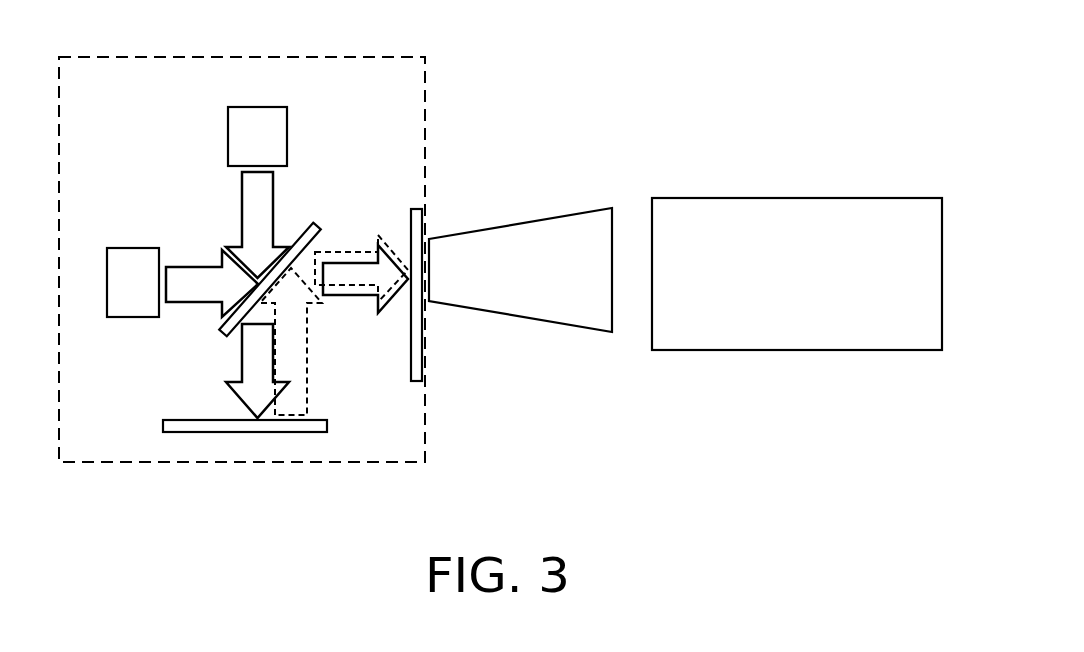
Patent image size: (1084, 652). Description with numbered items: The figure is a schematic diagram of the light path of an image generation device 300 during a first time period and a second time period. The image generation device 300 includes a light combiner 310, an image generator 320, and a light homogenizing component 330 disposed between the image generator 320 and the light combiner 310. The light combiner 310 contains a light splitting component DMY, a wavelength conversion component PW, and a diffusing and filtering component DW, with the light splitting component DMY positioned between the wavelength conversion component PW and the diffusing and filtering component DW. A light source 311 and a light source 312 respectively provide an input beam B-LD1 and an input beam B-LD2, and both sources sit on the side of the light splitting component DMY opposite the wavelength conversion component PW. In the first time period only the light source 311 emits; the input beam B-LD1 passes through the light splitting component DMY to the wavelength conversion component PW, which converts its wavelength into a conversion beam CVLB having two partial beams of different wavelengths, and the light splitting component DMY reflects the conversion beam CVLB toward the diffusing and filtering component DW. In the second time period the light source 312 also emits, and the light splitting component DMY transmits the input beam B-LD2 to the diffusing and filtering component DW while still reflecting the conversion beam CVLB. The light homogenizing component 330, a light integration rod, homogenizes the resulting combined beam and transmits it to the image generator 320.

The image generation device 300 is at (897, 497).
The light combiner 310 is at (354, 56).
The light source 311 is at (287, 135).
The light source 312 is at (120, 317).
The image generator 320 is at (795, 198).
The light homogenizing component 330 is at (542, 218).
The input beam B-LD1 is at (240, 188).
The input beam B-LD2 is at (178, 265).
The conversion beam CVLB is at (350, 252).
The light splitting component DMY is at (226, 327).
The wavelength conversion component PW is at (245, 432).
The diffusing and filtering component DW is at (411, 224).